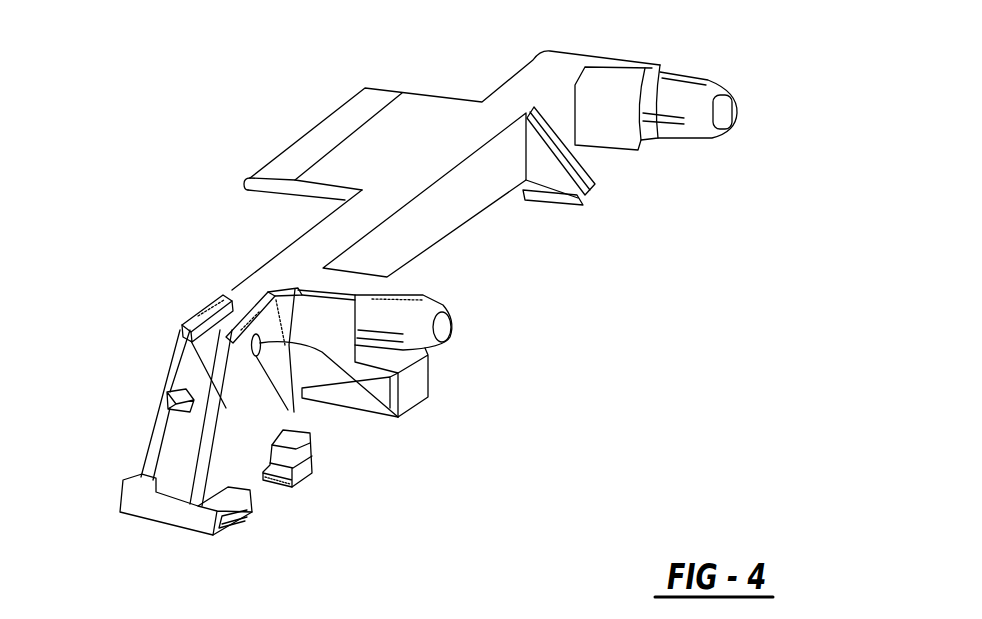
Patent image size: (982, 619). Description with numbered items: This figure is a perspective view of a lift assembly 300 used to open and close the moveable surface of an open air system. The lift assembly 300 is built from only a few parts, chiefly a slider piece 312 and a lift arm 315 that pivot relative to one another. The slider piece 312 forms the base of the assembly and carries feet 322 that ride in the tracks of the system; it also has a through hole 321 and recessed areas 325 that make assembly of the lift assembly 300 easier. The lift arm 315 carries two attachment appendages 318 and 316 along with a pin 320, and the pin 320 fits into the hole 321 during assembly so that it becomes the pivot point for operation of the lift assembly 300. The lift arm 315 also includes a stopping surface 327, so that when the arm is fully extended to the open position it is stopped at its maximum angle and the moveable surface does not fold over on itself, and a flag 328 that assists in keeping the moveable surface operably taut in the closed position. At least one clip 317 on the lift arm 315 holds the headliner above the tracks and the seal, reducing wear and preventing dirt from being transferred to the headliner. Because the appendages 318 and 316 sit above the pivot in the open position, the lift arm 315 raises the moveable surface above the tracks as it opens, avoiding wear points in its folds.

The lift assembly 300 is at (223, 142).
The slider piece 312 is at (150, 450).
The lift arm 315 is at (452, 211).
The appendage 316 is at (451, 322).
The clip 317 is at (592, 197).
The appendage 318 is at (700, 92).
The pin 320 is at (400, 417).
The through hole 321 is at (303, 397).
The feet 322 is at (313, 470).
The recessed areas 325 is at (198, 314).
The stopping surface 327 is at (168, 430).
The flag 328 is at (380, 110).